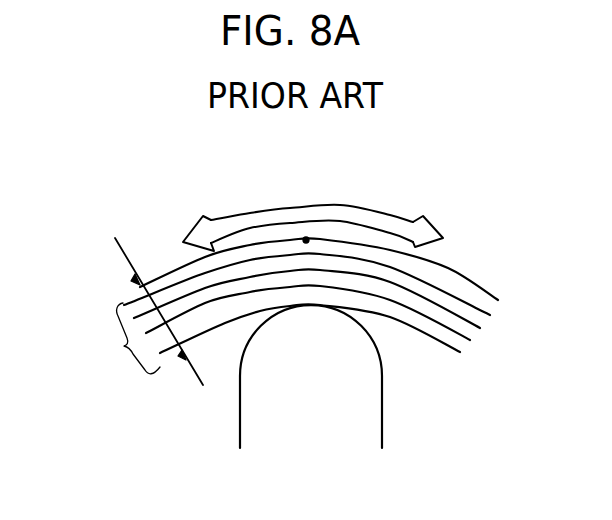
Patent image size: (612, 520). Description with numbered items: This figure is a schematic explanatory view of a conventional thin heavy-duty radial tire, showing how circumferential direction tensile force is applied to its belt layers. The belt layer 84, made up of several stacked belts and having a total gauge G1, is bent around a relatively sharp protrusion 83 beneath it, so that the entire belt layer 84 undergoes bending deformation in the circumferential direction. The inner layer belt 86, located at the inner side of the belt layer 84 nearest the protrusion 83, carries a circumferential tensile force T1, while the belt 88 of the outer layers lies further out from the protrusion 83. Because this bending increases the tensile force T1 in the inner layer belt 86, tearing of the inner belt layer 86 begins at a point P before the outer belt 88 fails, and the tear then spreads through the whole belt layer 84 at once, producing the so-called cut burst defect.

The protrusion 83 is at (372, 402).
The belt layer 84 is at (130, 347).
The inner layer belt 86 is at (448, 268).
The belt of the outer layers 88 is at (436, 321).
The point P is at (306, 240).
The inner layer tensile force T1 is at (378, 212).
The total gauge G1 is at (155, 308).